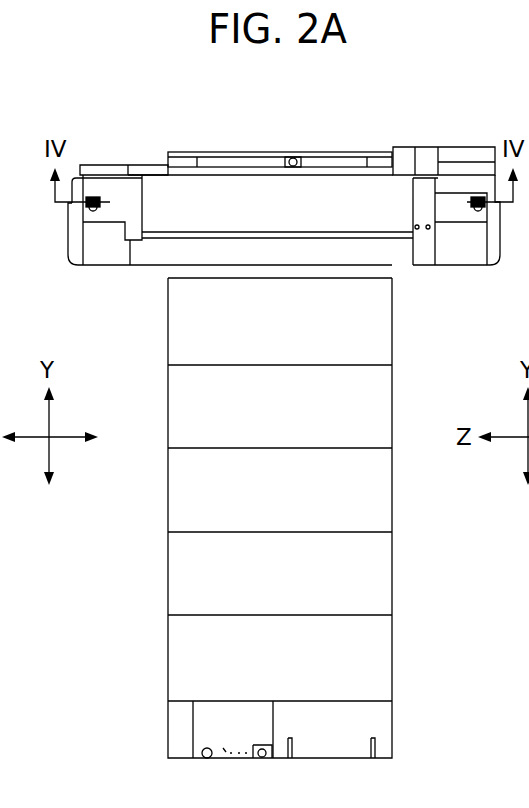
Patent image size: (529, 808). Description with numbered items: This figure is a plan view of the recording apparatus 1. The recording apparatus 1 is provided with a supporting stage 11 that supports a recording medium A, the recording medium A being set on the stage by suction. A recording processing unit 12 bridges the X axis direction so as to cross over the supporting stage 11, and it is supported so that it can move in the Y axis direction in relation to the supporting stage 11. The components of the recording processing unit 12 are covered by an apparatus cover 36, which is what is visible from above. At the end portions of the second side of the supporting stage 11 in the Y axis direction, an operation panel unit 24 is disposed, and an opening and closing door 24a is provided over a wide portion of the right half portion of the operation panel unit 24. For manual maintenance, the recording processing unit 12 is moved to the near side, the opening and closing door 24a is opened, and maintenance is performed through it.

The recording apparatus 1 is at (412, 118).
The supporting stage 11 is at (262, 145).
The recording processing unit 12 is at (60, 252).
The apparatus cover 36 is at (100, 185).
The operation panel unit 24 is at (178, 728).
The opening and closing door 24a is at (382, 732).
The recording medium A is at (178, 650).